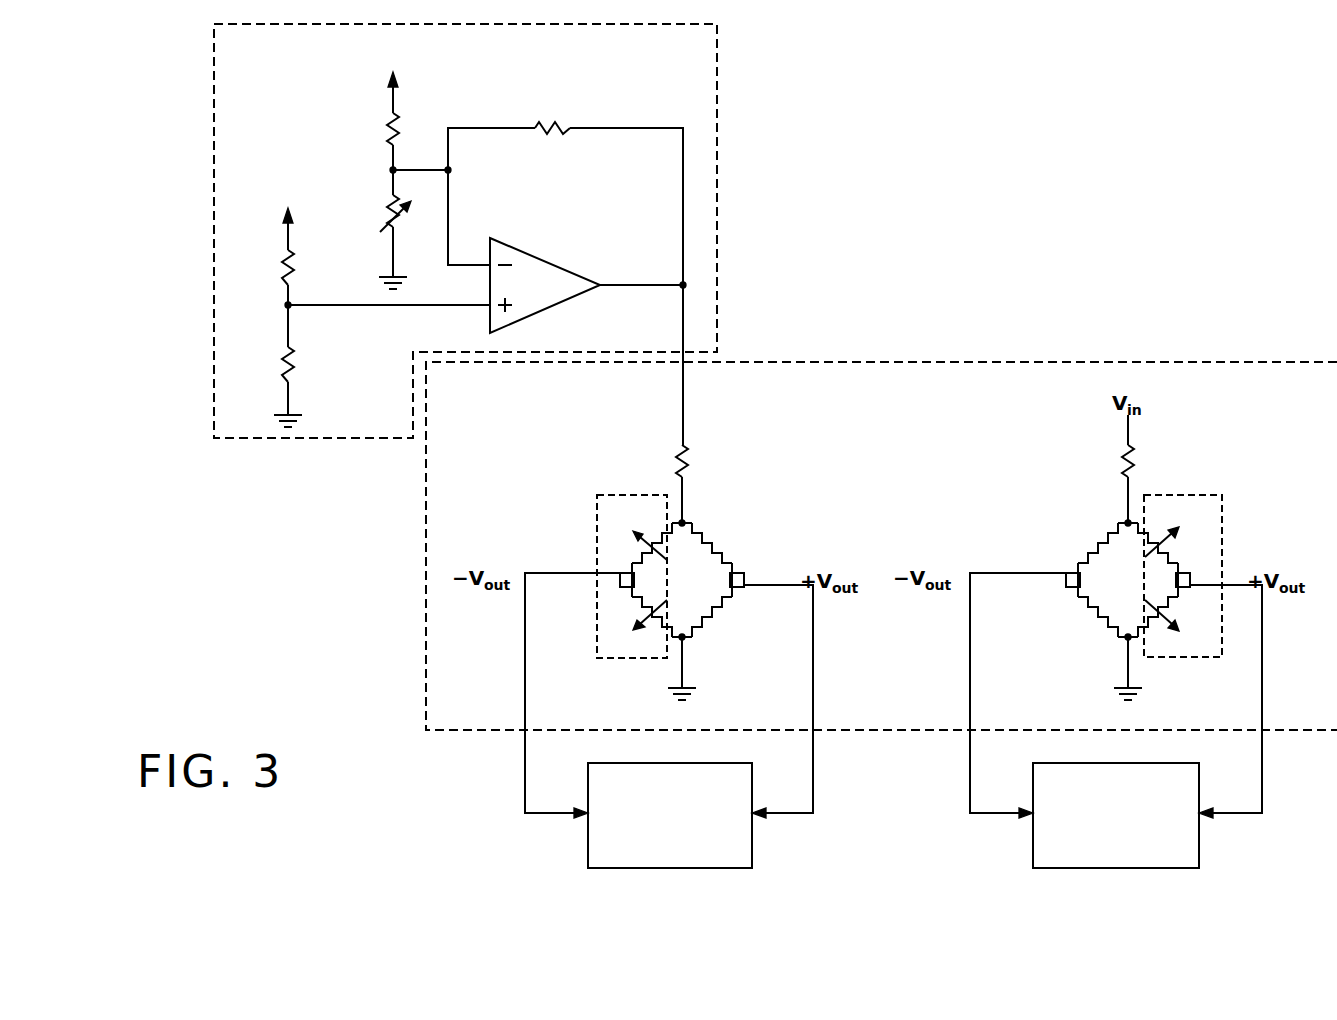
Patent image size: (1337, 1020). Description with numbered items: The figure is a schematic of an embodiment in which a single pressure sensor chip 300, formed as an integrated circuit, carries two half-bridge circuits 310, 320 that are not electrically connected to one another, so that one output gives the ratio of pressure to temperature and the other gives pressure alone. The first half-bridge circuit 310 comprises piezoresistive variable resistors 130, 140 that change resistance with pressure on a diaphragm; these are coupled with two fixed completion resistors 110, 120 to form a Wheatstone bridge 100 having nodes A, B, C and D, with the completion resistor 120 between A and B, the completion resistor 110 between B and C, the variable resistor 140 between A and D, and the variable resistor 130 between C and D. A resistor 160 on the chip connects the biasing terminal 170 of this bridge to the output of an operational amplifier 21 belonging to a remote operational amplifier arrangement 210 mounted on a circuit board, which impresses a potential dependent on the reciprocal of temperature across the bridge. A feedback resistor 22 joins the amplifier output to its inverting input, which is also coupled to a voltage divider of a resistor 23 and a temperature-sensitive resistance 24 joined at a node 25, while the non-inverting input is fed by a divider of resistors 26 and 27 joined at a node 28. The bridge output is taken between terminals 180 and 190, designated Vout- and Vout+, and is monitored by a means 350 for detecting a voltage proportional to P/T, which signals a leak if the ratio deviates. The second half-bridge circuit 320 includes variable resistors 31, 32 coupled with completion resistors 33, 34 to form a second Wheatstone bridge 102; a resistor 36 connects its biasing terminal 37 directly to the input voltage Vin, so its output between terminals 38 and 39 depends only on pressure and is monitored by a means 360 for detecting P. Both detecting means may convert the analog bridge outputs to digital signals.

The operational amplifier 21 is at (545, 266).
The feedback resistor 22 is at (549, 122).
The resistor 23 is at (397, 121).
The resistance 24 is at (404, 216).
The node 25 is at (393, 170).
The resistor 26 is at (290, 258).
The resistor 27 is at (291, 368).
The node 28 is at (289, 308).
The operational amplifier arrangement 210 is at (717, 155).
The sensor chip 300 is at (937, 362).
The Wheatstone bridge 100 is at (713, 537).
The completion resistor 110 is at (705, 622).
The completion resistor 120 is at (717, 548).
The variable resistor 130 is at (626, 610).
The variable resistor 140 is at (652, 532).
The resistor 160 is at (690, 452).
The biasing terminal 170 is at (686, 520).
The output terminal 180 is at (620, 572).
The output terminal 190 is at (768, 590).
The half-bridge circuit 310 is at (650, 662).
The means for detecting P/T 350 is at (752, 838).
The Wheatstone bridge 102 is at (1100, 532).
The variable resistor 31 is at (1150, 608).
The variable resistor 32 is at (1150, 538).
The completion resistor 33 is at (1078, 605).
The completion resistor 34 is at (1093, 550).
The resistor 36 is at (1136, 450).
The biasing terminal 37 is at (1125, 497).
The output terminal 38 is at (995, 575).
The output terminal 39 is at (1232, 590).
The half-bridge circuit 320 is at (1165, 660).
The means for detecting P 360 is at (1199, 838).